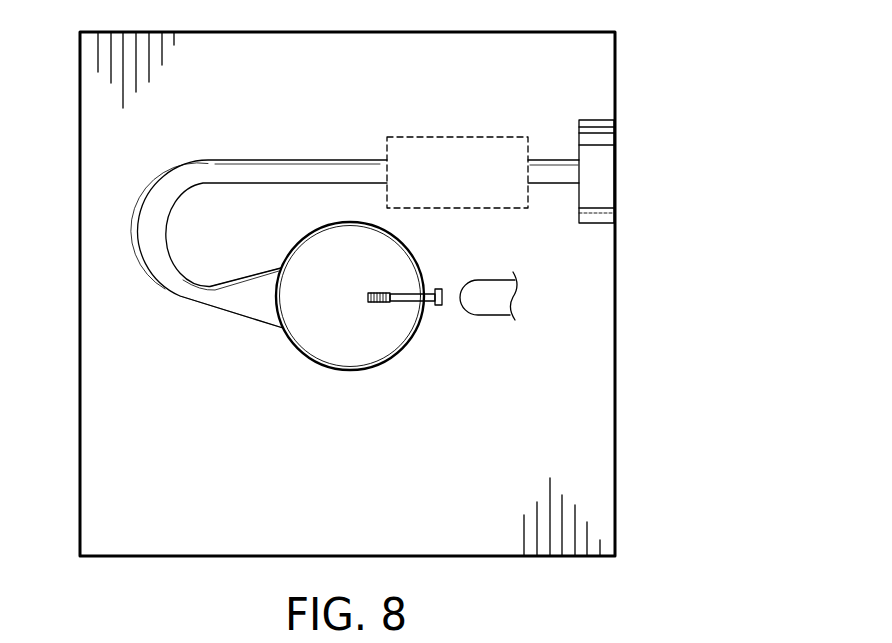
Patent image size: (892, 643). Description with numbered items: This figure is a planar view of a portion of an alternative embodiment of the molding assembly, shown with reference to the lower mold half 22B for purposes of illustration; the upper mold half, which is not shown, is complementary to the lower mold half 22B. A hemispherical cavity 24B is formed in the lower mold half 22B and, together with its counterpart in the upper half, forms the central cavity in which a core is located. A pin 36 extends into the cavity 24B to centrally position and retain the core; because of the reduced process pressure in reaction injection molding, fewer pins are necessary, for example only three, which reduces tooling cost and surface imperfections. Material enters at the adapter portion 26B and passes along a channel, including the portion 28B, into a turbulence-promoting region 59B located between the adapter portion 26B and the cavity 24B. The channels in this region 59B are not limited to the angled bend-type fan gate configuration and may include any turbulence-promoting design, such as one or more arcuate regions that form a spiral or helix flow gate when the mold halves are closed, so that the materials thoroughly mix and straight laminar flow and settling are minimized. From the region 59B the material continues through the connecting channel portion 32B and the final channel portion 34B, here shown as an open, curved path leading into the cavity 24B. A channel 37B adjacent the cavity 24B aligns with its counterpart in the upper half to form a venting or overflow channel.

The lower mold half 22B is at (615, 71).
The cavity 24B is at (355, 372).
The adapter portion 26B is at (598, 182).
The conduit 28B is at (548, 180).
The connecting channel portion 32B is at (287, 173).
The final channel portion 34B is at (253, 318).
The pin 36 is at (405, 303).
The channel 37B is at (493, 315).
The turbulence-promoting region 59B is at (459, 143).